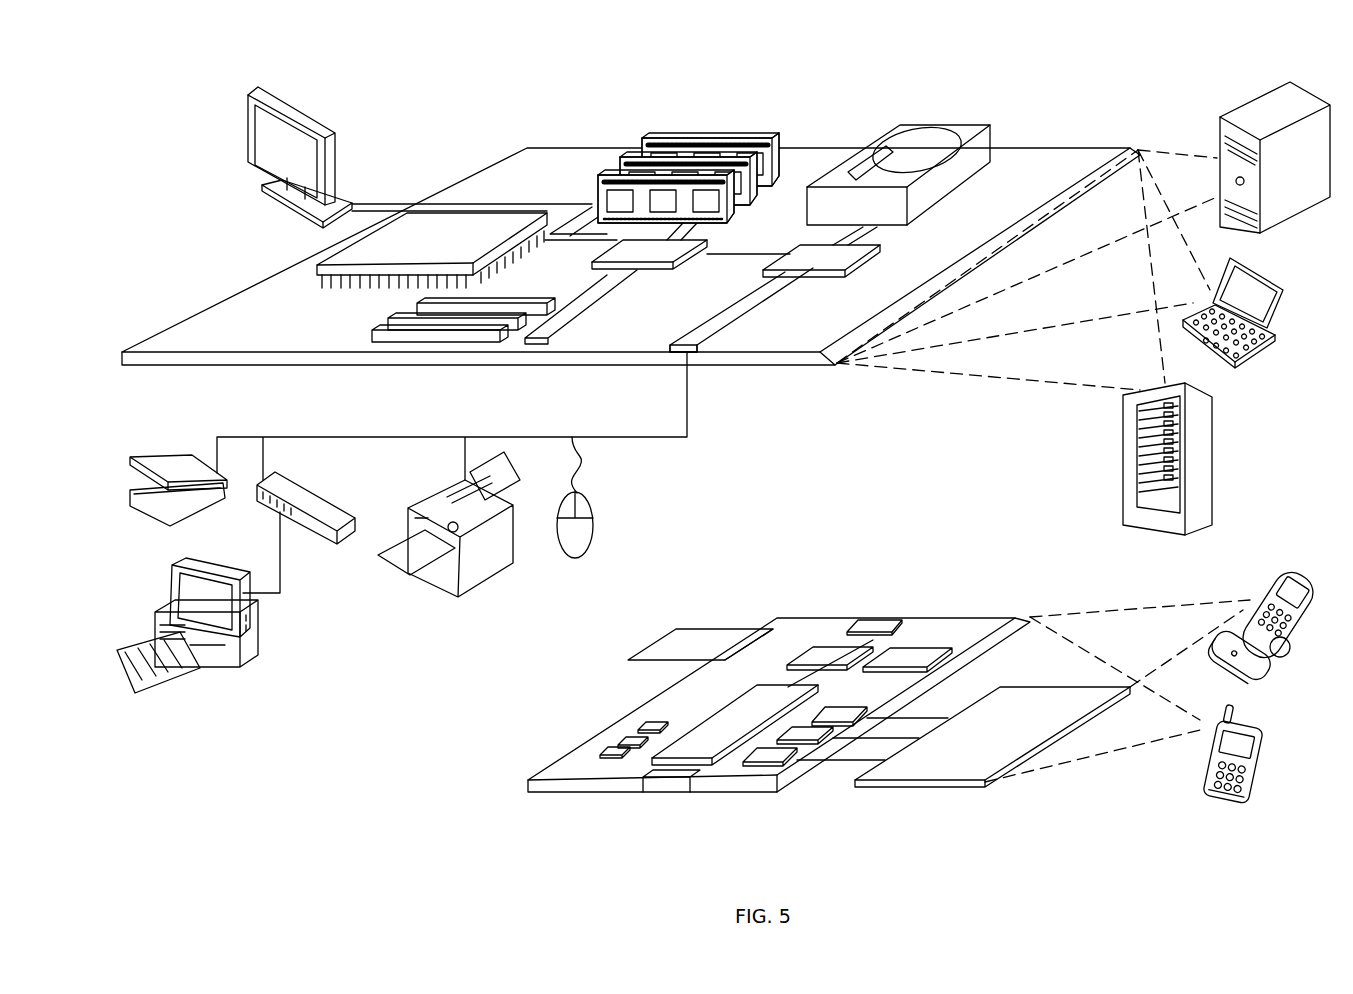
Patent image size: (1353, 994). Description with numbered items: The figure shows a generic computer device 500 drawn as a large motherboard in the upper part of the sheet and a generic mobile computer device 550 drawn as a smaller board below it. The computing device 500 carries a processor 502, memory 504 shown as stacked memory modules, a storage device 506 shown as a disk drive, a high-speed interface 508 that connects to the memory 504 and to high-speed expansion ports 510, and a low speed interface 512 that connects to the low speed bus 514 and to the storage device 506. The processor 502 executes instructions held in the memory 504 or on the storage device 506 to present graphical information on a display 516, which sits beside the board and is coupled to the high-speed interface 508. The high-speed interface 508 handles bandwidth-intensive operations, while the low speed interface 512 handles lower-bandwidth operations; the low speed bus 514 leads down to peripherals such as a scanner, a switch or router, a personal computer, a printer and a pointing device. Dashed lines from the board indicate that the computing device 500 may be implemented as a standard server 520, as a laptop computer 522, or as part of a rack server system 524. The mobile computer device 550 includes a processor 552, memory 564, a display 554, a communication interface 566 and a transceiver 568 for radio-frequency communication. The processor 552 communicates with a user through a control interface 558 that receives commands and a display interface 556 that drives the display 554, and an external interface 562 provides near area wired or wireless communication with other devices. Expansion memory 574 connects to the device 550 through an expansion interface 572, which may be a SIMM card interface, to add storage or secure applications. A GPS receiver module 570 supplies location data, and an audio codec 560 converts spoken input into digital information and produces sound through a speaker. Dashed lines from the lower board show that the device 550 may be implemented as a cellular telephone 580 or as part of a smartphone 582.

The computing device 500 is at (447, 116).
The processor 502 is at (318, 265).
The memory 504 is at (650, 138).
The storage device 506 is at (888, 128).
The high-speed interface 508 is at (625, 255).
The high-speed expansion ports 510 is at (388, 322).
The low speed interface 512 is at (803, 253).
The low speed bus 514 is at (683, 349).
The display 516 is at (249, 90).
The standard server 520 is at (1221, 135).
The laptop computer 522 is at (1285, 290).
The rack server system 524 is at (1123, 487).
The mobile computer device 550 is at (500, 790).
The processor 552 is at (707, 752).
The display 554 is at (948, 770).
The display interface 556 is at (777, 752).
The control interface 558 is at (812, 737).
The audio codec 560 is at (840, 712).
The external interface 562 is at (672, 790).
The memory 564 is at (618, 745).
The communication interface 566 is at (828, 655).
The transceiver 568 is at (910, 655).
The GPS receiver module 570 is at (877, 618).
The expansion interface 572 is at (753, 630).
The expansion memory 574 is at (678, 630).
The cellular telephone 580 is at (1265, 575).
The smartphone 582 is at (1207, 760).